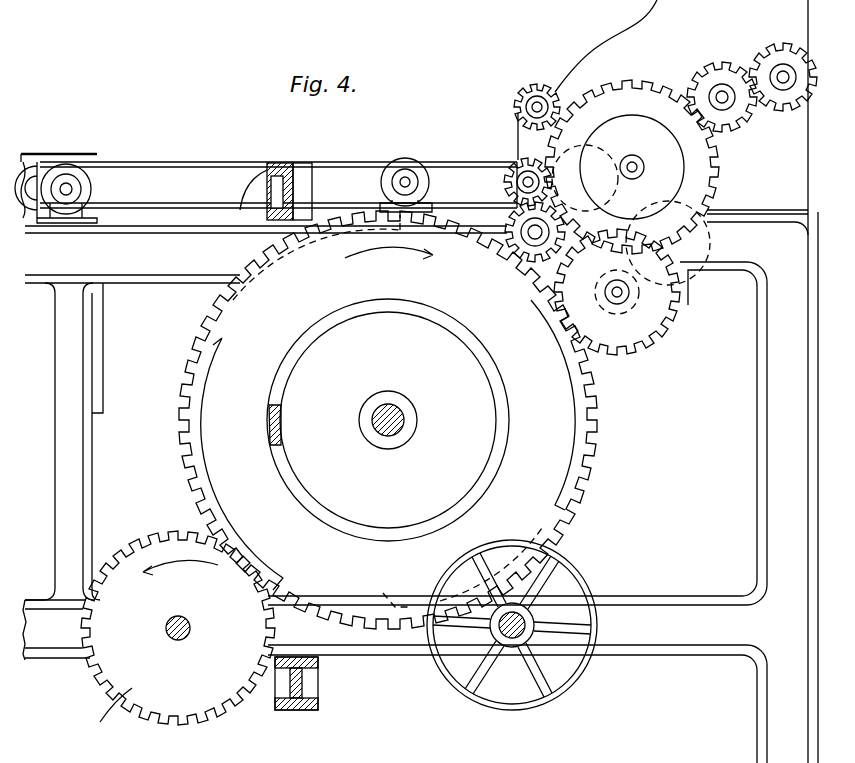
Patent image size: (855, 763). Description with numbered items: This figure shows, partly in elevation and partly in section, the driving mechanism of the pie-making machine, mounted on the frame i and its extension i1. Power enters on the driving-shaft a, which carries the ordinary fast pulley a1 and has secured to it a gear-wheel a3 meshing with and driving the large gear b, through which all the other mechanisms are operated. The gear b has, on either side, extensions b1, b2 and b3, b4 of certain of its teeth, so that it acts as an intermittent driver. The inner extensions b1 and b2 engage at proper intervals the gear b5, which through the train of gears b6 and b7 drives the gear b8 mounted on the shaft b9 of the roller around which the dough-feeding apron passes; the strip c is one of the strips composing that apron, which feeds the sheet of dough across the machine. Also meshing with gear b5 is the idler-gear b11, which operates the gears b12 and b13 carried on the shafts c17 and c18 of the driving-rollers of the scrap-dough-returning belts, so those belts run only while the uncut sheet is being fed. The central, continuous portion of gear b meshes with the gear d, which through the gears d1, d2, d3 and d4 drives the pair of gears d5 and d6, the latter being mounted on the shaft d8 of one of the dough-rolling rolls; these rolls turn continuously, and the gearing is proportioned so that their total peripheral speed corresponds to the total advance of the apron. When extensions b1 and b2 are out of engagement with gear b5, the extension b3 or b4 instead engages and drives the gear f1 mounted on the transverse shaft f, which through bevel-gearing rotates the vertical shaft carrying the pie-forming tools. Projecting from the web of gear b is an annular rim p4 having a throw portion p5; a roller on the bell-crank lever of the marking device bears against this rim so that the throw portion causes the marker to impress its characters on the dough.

The strip c is at (231, 162).
The frame i is at (773, 455).
The extension of the frame i1 is at (318, 685).
The gear-wheel b is at (532, 512).
The tooth extension b1 is at (316, 261).
The tooth extension b2 is at (460, 567).
The tooth extension b3 is at (580, 410).
The tooth extension b4 is at (204, 437).
The gear b5 is at (500, 248).
The gear b6 is at (507, 267).
The gear b7 is at (575, 222).
The gear b8 is at (517, 162).
The shaft b9 is at (520, 183).
The idler-gear b11 is at (641, 92).
The gear b12 is at (717, 72).
The gear b13 is at (778, 50).
The shaft c17 is at (727, 100).
The shaft c18 is at (786, 82).
The gear d is at (636, 330).
The gear d1 is at (638, 308).
The gear d2 is at (677, 260).
The gear d3 is at (707, 228).
The gear d4 is at (706, 178).
The gear d5 is at (538, 140).
The gear d6 is at (532, 97).
The shaft d8 is at (547, 104).
The annular rim p4 is at (334, 519).
The throw portion p5 is at (283, 425).
The shaft f is at (190, 635).
The gear f1 is at (107, 715).
The driving-shaft a is at (512, 642).
The fast pulley a1 is at (578, 672).
The gear-wheel a3 is at (543, 605).